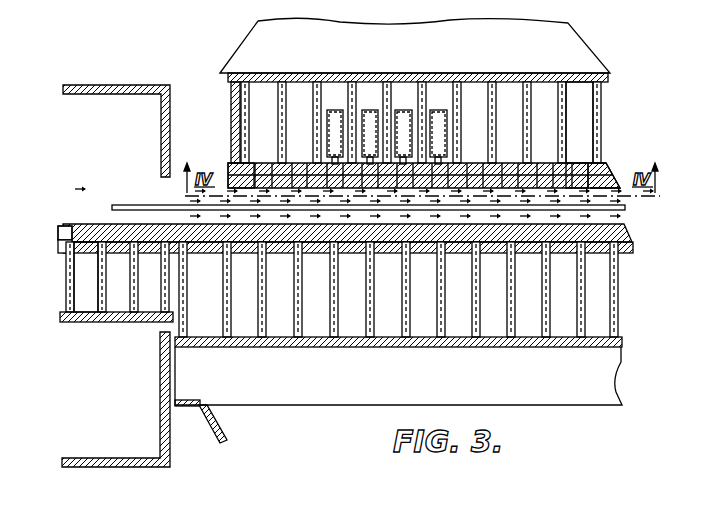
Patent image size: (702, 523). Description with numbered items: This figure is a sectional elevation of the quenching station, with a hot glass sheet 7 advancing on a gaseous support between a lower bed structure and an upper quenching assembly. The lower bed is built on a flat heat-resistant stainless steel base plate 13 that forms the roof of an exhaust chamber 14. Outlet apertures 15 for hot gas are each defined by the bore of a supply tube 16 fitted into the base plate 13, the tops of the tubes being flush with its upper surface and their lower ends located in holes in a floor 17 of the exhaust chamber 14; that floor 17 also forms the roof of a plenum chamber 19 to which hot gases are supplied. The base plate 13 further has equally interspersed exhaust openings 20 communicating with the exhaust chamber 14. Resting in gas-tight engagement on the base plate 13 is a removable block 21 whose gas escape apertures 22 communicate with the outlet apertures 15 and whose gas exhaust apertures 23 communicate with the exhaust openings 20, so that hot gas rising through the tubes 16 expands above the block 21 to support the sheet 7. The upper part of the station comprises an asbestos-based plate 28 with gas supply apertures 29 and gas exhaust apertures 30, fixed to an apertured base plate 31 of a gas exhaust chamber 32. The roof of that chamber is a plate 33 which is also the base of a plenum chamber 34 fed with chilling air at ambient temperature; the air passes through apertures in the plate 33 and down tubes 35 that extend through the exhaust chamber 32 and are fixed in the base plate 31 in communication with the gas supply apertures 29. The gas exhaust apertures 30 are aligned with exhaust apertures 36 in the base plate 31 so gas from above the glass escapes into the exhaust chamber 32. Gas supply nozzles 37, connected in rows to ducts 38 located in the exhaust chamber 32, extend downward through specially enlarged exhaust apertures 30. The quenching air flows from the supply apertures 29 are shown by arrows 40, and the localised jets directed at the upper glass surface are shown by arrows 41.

The glass sheet 7 is at (130, 205).
The base plate 13 is at (62, 248).
The exhaust chamber 14 is at (83, 298).
The outlet apertures 15 is at (66, 231).
The supply tube 16 is at (66, 300).
The floor 17 is at (110, 324).
The plenum chamber 19 is at (133, 467).
The exhaust openings 20 is at (84, 254).
The removable block 21 is at (59, 235).
The gas escape apertures 22 is at (125, 242).
The gas exhaust apertures 23 is at (121, 227).
The plate 28 is at (230, 182).
The gas supply apertures 29 is at (545, 160).
The gas exhaust apertures 30 is at (452, 173).
The apertured base plate 31 is at (612, 166).
The gas exhaust chamber 32 is at (575, 100).
The plate 33 is at (370, 75).
The plenum chamber 34 is at (580, 36).
The tubes 35 is at (601, 97).
The exhaust apertures 36 is at (578, 166).
The gas supply nozzles 37 is at (310, 162).
The ducts 38 is at (337, 110).
The arrows 40 is at (566, 198).
The arrows 41 is at (459, 255).